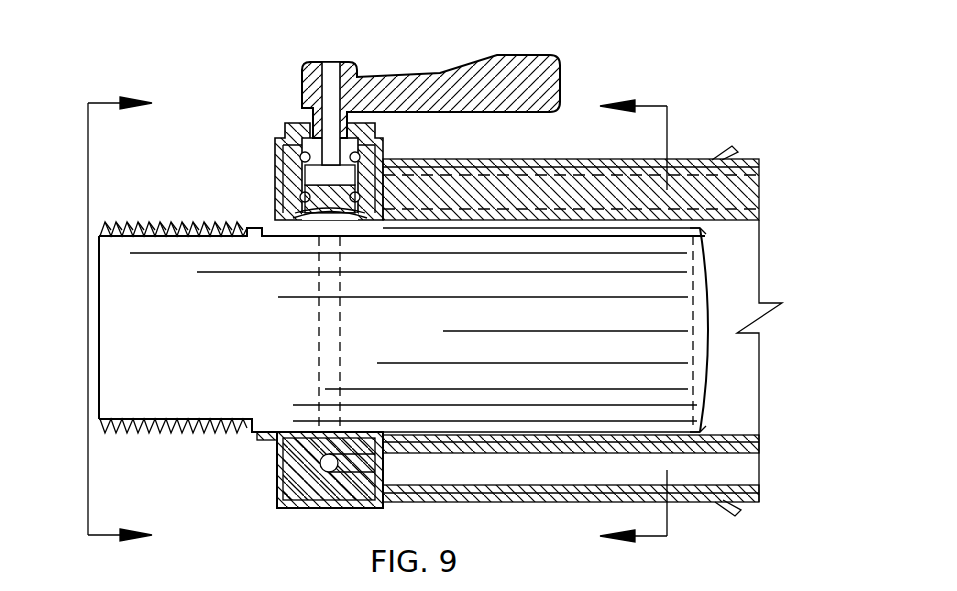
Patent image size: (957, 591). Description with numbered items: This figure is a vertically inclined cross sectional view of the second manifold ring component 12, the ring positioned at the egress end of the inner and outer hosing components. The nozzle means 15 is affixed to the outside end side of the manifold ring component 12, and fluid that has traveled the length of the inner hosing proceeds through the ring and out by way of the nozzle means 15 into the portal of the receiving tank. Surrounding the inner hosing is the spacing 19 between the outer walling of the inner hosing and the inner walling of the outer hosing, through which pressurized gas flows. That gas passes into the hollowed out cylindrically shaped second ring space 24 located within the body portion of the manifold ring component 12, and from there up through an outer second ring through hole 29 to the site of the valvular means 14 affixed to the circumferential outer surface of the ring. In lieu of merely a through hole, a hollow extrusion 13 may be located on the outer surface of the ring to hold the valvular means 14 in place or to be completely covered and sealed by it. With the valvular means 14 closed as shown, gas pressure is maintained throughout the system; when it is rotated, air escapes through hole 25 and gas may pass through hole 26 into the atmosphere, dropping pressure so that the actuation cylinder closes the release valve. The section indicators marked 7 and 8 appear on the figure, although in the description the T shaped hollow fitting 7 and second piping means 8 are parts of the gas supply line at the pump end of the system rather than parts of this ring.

The T shaped hollow fitting 7 is at (633, 321).
The second piping means 8 is at (120, 326).
The second manifold ring component 12 is at (285, 501).
The hollow extrusion 13 is at (277, 198).
The valvular means 14 is at (490, 66).
The nozzle means 15 is at (99, 363).
The spacing 19 is at (762, 190).
The second ring space 24 is at (318, 312).
The hole 25 is at (332, 70).
The hole 26 is at (325, 178).
The outer second ring through hole 29 is at (110, 239).